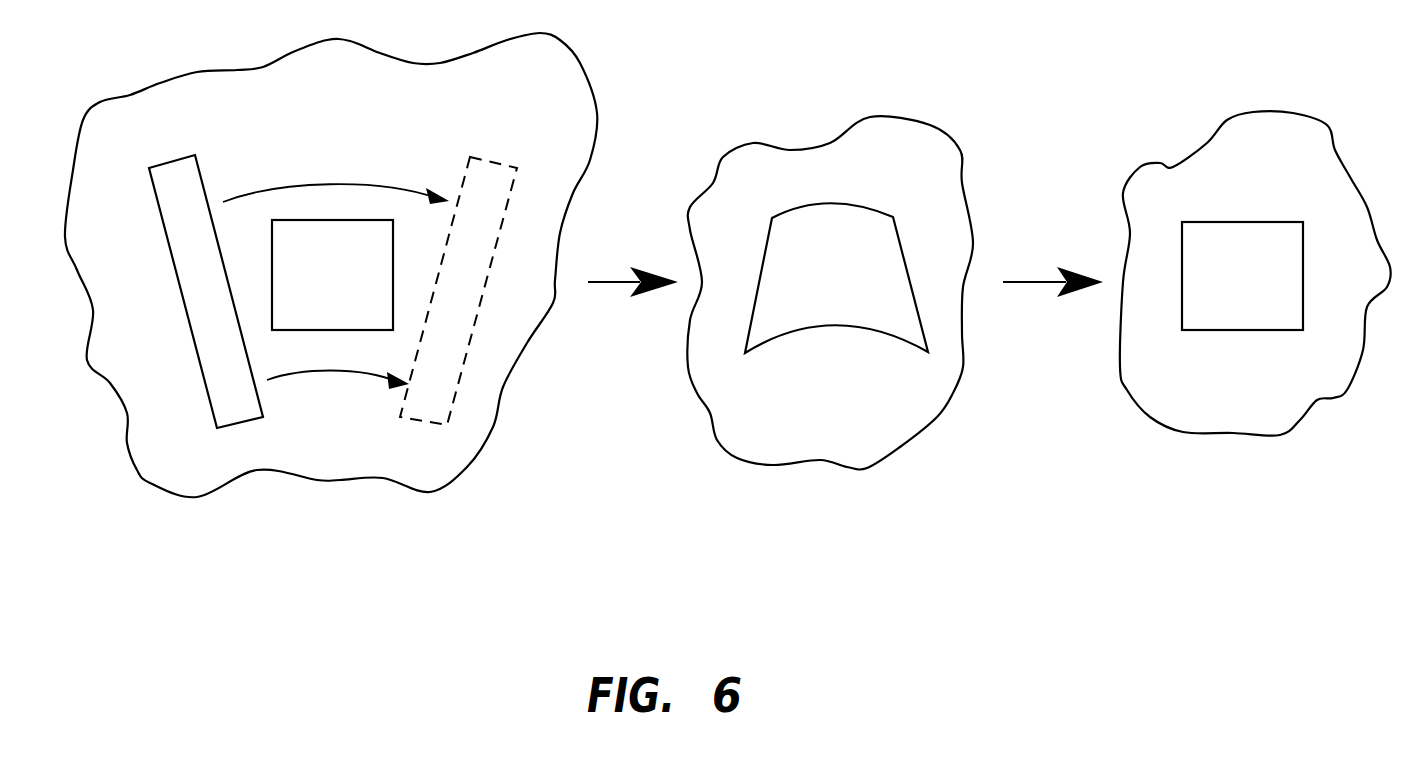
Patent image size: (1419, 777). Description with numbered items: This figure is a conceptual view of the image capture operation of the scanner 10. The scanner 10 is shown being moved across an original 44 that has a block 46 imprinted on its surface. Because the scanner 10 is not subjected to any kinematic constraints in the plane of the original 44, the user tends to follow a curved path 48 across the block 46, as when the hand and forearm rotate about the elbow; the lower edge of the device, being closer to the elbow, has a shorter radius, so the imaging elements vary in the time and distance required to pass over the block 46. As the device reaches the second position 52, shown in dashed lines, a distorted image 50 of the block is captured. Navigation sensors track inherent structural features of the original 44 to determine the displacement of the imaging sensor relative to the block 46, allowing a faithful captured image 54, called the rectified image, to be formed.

The scanner 10 is at (223, 387).
The original 44 is at (402, 458).
The block 46 is at (354, 282).
The curved path 48 is at (375, 183).
The distorted image 50 is at (843, 222).
The second position 52 is at (443, 358).
The faithful captured image 54 is at (1237, 240).